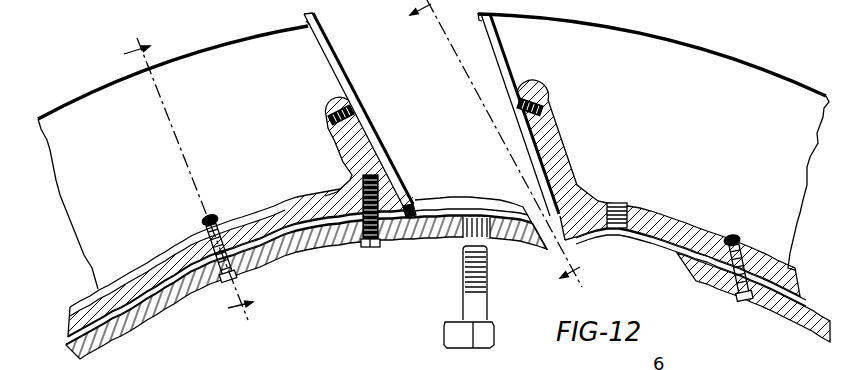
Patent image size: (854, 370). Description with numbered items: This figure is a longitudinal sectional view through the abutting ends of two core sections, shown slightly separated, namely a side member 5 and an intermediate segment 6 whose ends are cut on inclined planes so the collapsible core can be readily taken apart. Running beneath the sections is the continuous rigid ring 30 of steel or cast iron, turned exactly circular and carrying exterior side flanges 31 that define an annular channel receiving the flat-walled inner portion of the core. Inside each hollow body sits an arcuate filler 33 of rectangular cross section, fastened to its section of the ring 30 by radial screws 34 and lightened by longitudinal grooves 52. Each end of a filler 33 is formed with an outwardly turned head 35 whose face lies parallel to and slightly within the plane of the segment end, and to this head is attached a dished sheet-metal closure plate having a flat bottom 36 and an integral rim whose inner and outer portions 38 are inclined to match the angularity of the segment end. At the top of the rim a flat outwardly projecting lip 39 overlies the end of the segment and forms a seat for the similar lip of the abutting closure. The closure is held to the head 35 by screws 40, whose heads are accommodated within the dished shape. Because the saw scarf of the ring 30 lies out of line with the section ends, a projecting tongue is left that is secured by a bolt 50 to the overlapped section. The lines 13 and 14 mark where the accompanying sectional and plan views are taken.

The side member 5 is at (738, 58).
The intermediate segment 6 is at (66, 101).
The section line 13— 13 is at (200, 175).
The section line 14— 14 is at (503, 143).
The ring 30 is at (119, 334).
The side flange 31 is at (463, 208).
The arcuate filler 33 is at (138, 267).
The radial screw 34 is at (216, 214).
The outwardly turned head 35 is at (332, 137).
The flat bottom 36 is at (327, 60).
The inclined rim portion 38 is at (313, 19).
The outwardly projecting lip 39 is at (305, 23).
The screw 40 is at (329, 113).
The bolt 50 is at (463, 300).
The longitudinal groove 52 is at (175, 252).